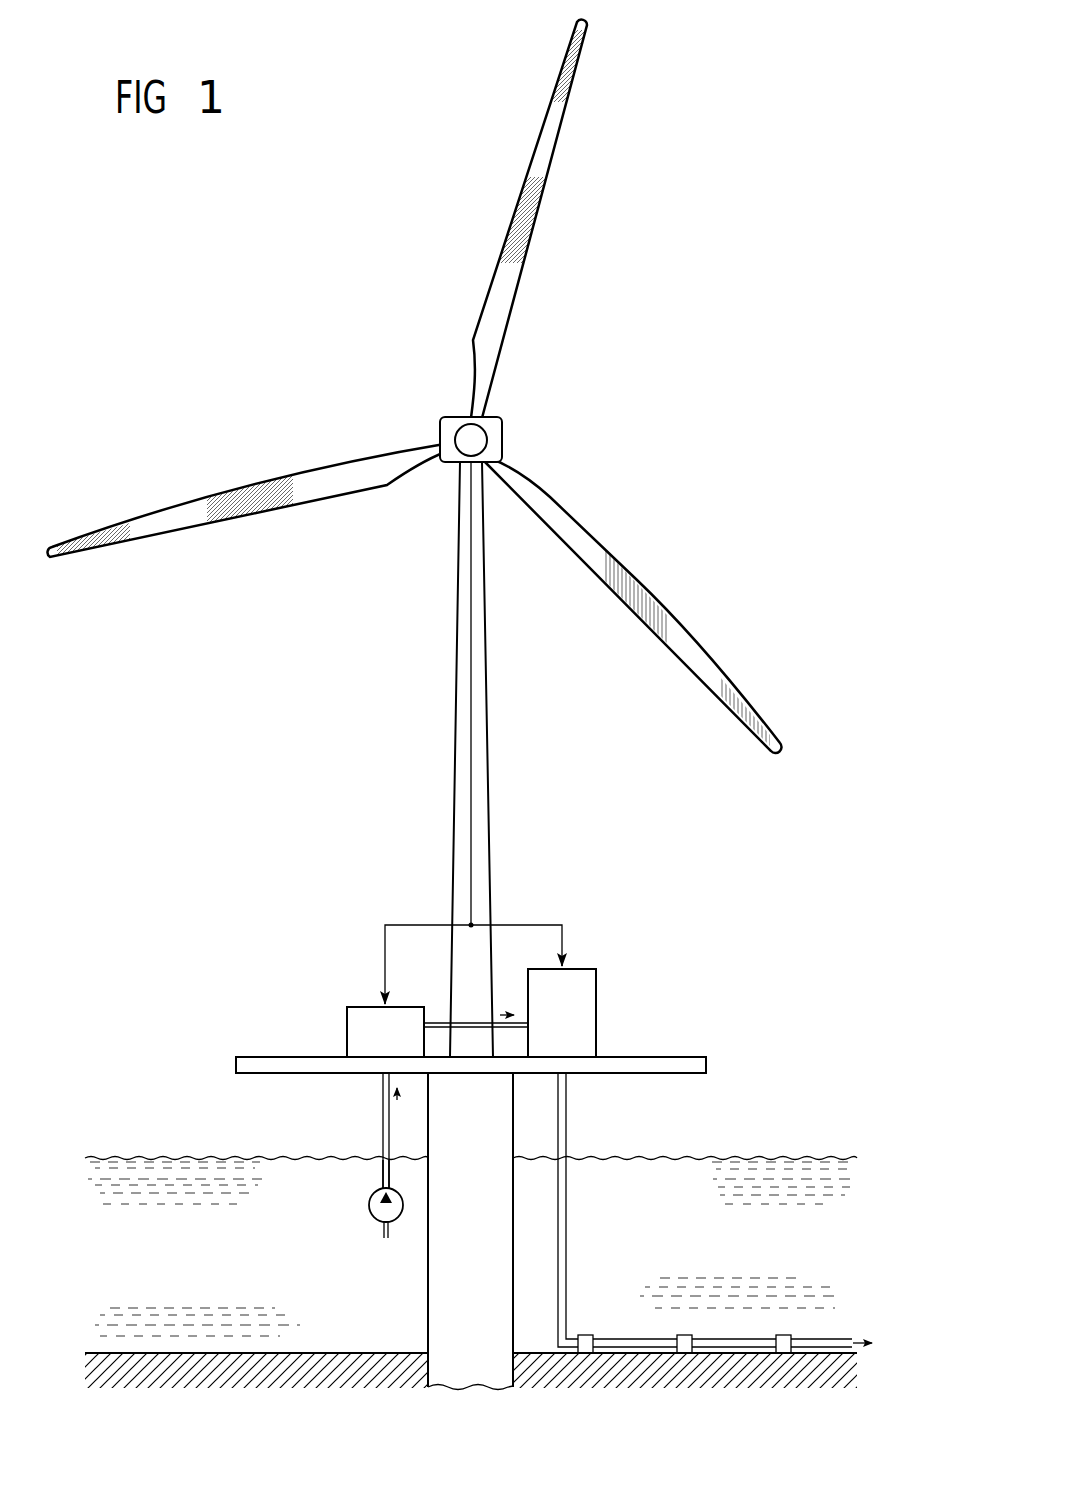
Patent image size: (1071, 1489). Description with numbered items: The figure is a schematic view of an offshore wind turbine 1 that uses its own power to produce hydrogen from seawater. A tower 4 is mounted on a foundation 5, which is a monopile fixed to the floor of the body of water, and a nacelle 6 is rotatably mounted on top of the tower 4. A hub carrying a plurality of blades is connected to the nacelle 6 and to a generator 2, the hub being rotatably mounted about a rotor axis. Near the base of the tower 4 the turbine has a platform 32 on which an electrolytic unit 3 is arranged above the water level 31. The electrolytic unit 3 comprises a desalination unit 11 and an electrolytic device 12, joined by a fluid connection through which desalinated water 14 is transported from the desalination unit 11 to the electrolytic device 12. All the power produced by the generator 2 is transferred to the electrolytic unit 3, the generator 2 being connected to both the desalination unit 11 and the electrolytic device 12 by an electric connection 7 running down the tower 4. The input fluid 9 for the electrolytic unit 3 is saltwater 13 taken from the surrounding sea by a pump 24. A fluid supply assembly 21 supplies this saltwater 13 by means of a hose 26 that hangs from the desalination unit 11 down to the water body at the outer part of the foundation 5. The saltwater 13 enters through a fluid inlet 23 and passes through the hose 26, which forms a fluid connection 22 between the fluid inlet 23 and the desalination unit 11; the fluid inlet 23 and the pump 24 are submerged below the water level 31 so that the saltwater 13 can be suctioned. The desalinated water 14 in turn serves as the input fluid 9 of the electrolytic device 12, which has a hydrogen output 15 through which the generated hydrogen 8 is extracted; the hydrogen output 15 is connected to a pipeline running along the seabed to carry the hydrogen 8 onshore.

The offshore wind turbine 1 is at (712, 401).
The generator 2 is at (428, 418).
The electrolytic unit 3 is at (615, 896).
The tower 4 is at (454, 705).
The foundation 5 is at (428, 1306).
The nacelle 6 is at (503, 438).
The electric connection 7 is at (470, 820).
The hydrogen 8 is at (715, 1213).
The input fluid 9 is at (143, 1269).
The desalination unit 11 is at (347, 1030).
The electrolytic device 12 is at (596, 1010).
The saltwater 13 is at (383, 1095).
The desalinated water 14 is at (440, 1020).
The hydrogen output 15 is at (566, 1092).
The fluid supply assembly 21 is at (283, 1127).
The fluid connection 22 is at (328, 1183).
The fluid inlet 23 is at (386, 1238).
The pump 24 is at (370, 1212).
The hose 26 is at (380, 1174).
The water level 31 is at (815, 1158).
The platform 32 is at (706, 1065).